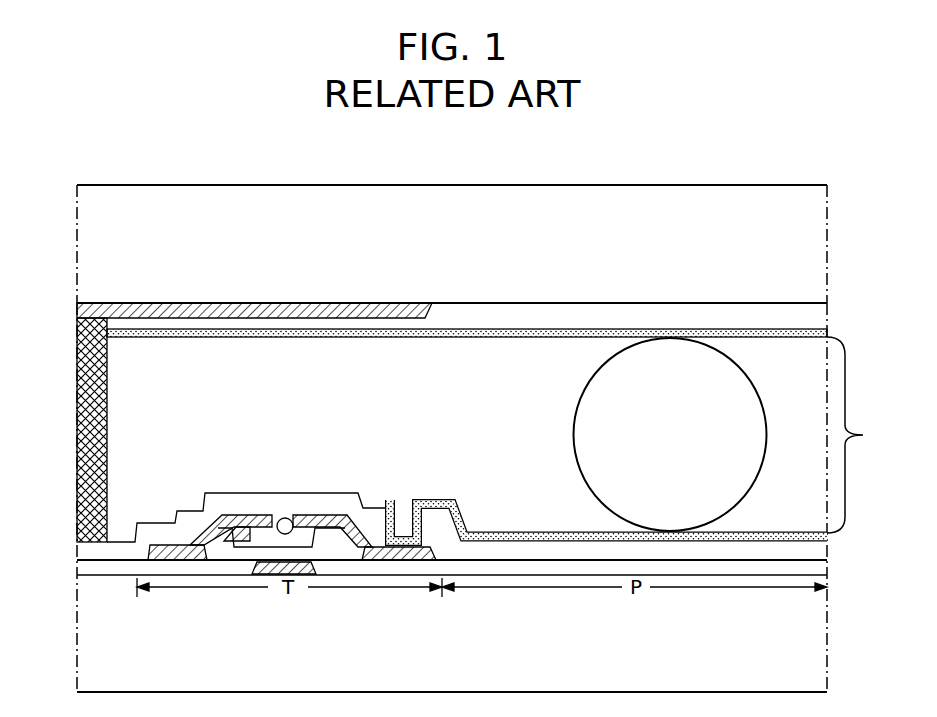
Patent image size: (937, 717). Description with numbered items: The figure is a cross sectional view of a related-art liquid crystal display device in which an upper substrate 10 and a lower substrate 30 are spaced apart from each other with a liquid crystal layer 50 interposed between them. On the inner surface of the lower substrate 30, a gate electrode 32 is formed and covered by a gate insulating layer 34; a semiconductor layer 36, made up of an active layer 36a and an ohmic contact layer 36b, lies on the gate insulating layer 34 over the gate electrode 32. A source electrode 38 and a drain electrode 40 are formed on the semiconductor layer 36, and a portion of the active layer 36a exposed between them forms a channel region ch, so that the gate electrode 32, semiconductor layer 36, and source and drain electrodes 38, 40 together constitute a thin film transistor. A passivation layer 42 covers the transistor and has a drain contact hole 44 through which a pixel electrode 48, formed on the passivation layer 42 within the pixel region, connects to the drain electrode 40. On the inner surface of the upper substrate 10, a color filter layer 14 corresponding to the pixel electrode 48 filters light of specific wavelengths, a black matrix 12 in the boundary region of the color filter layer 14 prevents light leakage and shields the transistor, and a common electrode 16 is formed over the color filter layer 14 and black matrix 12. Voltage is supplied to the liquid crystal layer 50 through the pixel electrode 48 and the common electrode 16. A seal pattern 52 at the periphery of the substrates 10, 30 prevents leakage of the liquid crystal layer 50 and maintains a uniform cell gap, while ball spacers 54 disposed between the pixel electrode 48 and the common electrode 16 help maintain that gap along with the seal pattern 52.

The upper substrate 10 is at (466, 256).
The black matrix 12 is at (298, 302).
The color filter layer 14 is at (593, 305).
The common electrode 16 is at (541, 338).
The lower substrate 30 is at (466, 642).
The gate electrode 32 is at (312, 575).
The gate insulating layer 34 is at (392, 561).
The semiconductor layer 36 is at (242, 641).
The active layer 36a is at (206, 560).
The ohmic contact layer 36b is at (238, 545).
The source electrode 38 is at (250, 513).
The drain electrode 40 is at (323, 513).
The passivation layer 42 is at (354, 493).
The drain contact hole 44 is at (406, 484).
The pixel electrode 48 is at (540, 531).
The liquid crystal layer 50 is at (864, 435).
The seal pattern 52 is at (78, 424).
The ball spacers 54 is at (758, 412).
The channel region ch is at (285, 518).